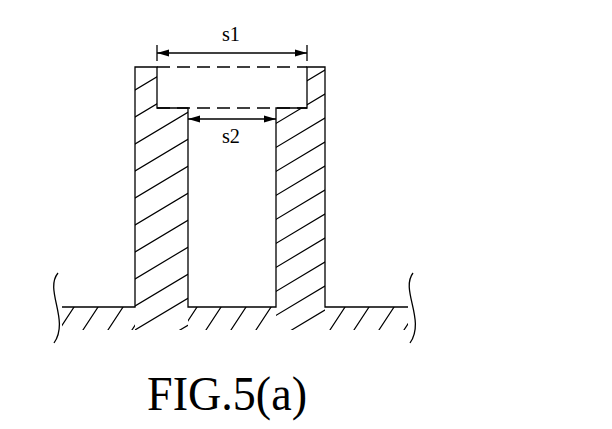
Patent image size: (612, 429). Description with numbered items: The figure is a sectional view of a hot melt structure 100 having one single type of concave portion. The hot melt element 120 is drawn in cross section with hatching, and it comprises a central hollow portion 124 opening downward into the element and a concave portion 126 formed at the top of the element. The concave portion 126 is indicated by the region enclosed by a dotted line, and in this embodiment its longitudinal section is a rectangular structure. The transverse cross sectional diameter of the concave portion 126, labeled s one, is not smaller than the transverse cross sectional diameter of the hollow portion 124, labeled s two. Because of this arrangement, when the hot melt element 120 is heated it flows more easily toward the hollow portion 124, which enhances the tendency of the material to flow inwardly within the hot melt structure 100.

The hot melt structure 100 is at (395, 54).
The hot melt element 120 is at (312, 165).
The hollow portion 124 is at (207, 220).
The concave portion 126 is at (182, 91).